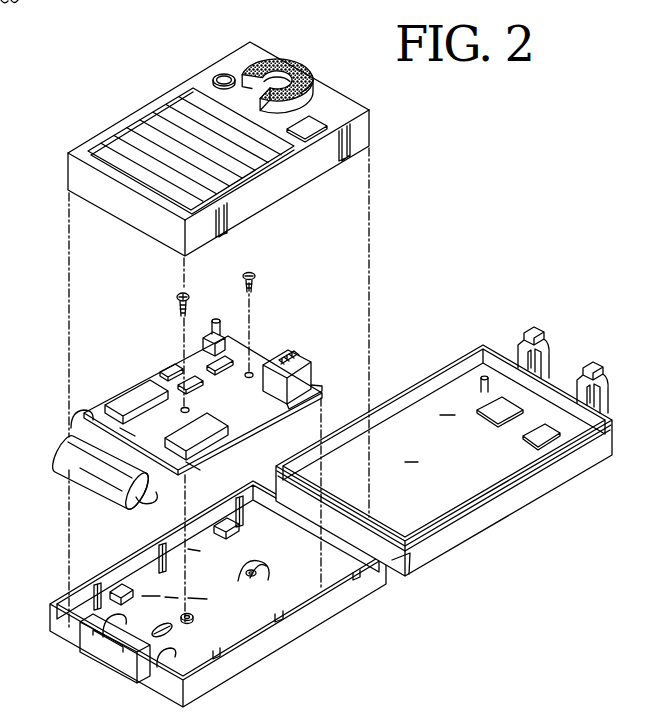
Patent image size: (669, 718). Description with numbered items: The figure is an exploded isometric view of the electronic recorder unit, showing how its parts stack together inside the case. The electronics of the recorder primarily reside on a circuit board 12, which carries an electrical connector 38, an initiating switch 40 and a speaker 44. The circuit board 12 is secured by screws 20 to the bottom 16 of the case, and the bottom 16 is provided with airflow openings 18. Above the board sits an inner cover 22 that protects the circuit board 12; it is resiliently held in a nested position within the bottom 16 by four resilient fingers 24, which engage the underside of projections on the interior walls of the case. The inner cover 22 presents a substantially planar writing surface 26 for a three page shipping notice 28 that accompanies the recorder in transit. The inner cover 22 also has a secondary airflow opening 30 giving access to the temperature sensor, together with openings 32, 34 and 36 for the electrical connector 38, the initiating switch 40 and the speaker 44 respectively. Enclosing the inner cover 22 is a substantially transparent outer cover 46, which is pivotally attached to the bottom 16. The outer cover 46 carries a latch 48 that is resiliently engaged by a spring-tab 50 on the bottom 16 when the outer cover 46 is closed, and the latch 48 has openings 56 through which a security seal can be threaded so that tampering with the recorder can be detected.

The circuit board 12 is at (266, 359).
The bottom 16 is at (322, 624).
The airflow openings 18 is at (133, 592).
The screws 20 is at (256, 275).
The inner cover 22 is at (348, 103).
The resilient fingers 24 is at (350, 162).
The writing surface 26 is at (90, 140).
The shipping notice 28 is at (160, 99).
The secondary airflow opening 30 is at (283, 160).
The opening 32 is at (318, 113).
The opening 34 is at (219, 74).
The opening 36 is at (278, 80).
The electrical connector 38 is at (293, 360).
The initiating switch 40 is at (207, 328).
The speaker 44 is at (314, 86).
The outer cover 46 is at (518, 508).
The latch 48 is at (527, 333).
The spring-tab 50 is at (98, 657).
The openings 56 is at (600, 394).